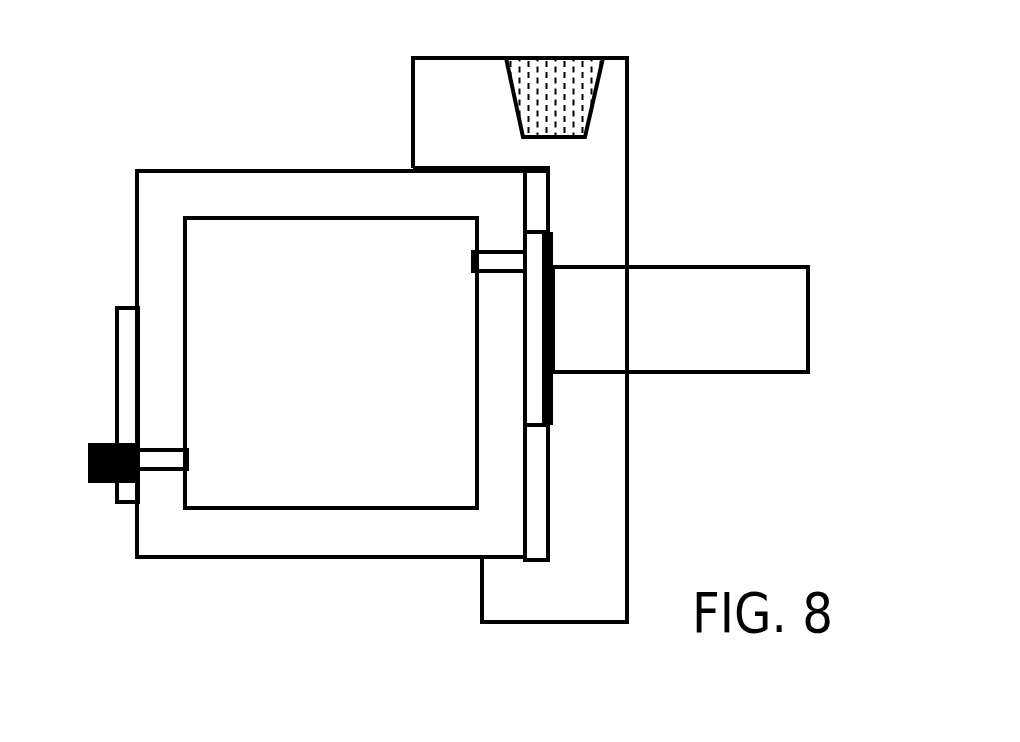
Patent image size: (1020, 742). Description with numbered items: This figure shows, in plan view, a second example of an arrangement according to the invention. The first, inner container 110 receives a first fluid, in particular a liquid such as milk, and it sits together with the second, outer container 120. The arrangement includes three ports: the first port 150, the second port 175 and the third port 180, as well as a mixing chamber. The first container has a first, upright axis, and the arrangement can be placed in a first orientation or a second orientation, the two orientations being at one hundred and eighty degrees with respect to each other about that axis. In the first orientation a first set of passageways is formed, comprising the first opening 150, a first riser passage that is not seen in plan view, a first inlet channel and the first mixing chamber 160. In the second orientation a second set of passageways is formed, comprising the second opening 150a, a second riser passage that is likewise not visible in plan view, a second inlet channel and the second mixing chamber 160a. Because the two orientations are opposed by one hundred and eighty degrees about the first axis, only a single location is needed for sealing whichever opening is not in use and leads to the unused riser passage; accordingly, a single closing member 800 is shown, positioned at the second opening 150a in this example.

The first, inner, container 110 is at (162, 170).
The second, outer, container 120 is at (627, 463).
The first port 150 is at (473, 267).
The second opening 150a is at (222, 443).
The first mixing chamber 160 is at (528, 305).
The second mixing chamber 160a is at (117, 347).
The second port 175 is at (595, 87).
The third port 180 is at (707, 265).
The closing member 800 is at (90, 457).